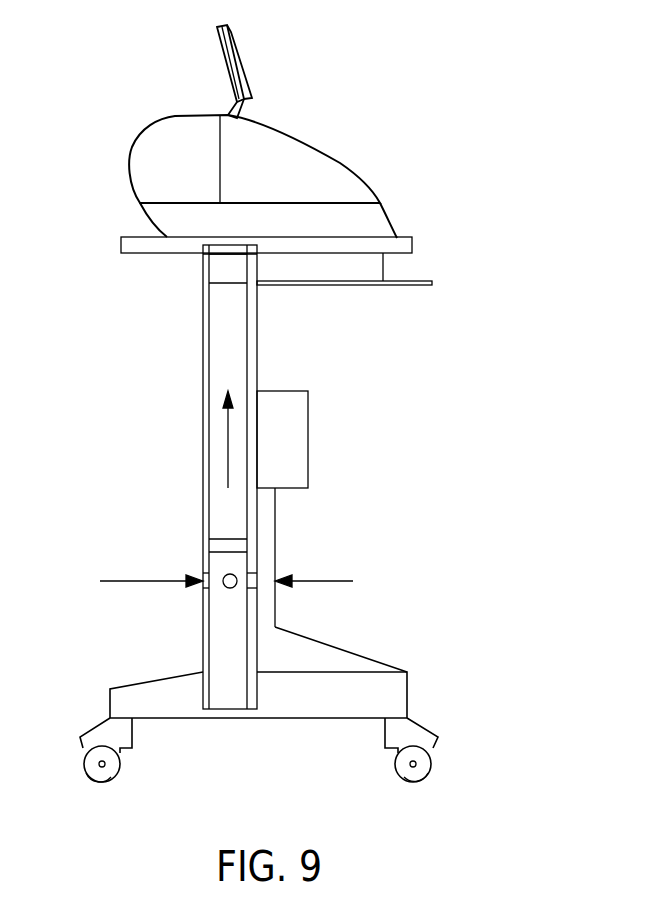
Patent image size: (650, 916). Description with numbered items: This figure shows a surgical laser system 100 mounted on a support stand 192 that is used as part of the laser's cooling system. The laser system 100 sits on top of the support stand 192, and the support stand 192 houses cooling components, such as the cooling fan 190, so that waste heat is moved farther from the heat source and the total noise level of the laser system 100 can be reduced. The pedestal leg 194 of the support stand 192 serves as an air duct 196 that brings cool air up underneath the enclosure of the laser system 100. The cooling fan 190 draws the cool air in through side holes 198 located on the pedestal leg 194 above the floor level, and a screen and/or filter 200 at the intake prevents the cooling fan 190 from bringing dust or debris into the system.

The surgical laser system 100 is at (153, 172).
The cooling fan 190 is at (240, 275).
The support stand 192 is at (413, 242).
The pedestal leg 194 is at (203, 327).
The air duct 196 is at (227, 513).
The side holes 198 is at (320, 582).
The screen and/or filter 200 is at (248, 548).